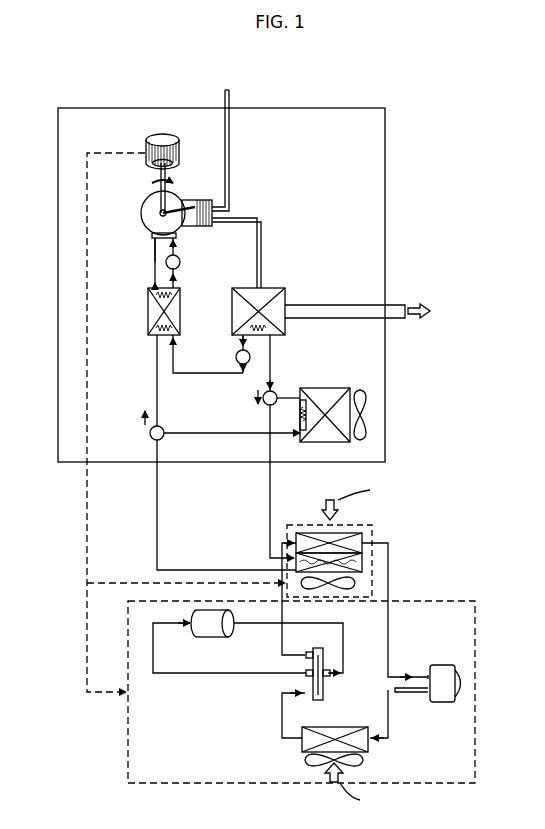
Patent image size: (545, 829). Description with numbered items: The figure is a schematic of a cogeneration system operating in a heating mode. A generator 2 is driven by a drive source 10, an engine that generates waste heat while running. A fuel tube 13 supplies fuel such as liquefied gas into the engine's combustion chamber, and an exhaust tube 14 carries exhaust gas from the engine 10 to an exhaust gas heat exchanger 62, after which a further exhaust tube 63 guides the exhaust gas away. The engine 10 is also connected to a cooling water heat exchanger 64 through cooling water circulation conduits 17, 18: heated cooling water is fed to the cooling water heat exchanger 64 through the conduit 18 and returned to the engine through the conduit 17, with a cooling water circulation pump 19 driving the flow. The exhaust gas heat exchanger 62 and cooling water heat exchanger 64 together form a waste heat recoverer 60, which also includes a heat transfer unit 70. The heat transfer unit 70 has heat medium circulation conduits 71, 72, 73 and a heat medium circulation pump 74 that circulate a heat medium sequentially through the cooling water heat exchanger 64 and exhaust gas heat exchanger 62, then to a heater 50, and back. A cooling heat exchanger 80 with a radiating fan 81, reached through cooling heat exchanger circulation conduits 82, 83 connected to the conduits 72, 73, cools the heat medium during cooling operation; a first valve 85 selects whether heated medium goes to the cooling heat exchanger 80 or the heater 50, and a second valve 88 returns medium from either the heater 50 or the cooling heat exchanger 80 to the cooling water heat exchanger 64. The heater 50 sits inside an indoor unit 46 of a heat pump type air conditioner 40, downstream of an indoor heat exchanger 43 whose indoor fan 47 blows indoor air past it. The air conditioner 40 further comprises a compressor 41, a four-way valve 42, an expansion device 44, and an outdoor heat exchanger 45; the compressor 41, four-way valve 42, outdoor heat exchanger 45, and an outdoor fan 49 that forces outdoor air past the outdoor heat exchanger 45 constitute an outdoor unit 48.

The generator 2 is at (180, 148).
The drive source 10 is at (150, 208).
The fuel tube 13 is at (229, 190).
The exhaust tube 14 is at (262, 254).
The cooling water circulation conduit 17 is at (154, 285).
The cooling water circulation conduit 18 is at (154, 257).
The cooling water circulation pump 19 is at (181, 262).
The heat pump type air conditioner 40 is at (465, 585).
The compressor 41 is at (210, 630).
The 4-way valve 42 is at (325, 690).
The indoor heat exchanger 43 is at (358, 533).
The expansion device 44 is at (462, 687).
The outdoor heat exchanger 45 is at (368, 747).
The indoor unit 46 is at (374, 530).
The indoor fan 47 is at (356, 583).
The outdoor unit 48 is at (122, 745).
The outdoor fan 49 is at (304, 760).
The heater 50 is at (364, 562).
The waste heat recoverer 60 is at (140, 305).
The exhaust gas heat exchanger 62 is at (284, 325).
The exhaust tube 63 is at (350, 304).
The cooling water heat exchanger 64 is at (148, 320).
The heat transfer unit 70 is at (146, 446).
The heat medium circulation conduit 71 is at (220, 374).
The heat medium circulation conduit 72 is at (270, 490).
The heat medium circulation conduit 73 is at (156, 498).
The heat medium circulation pump 74 is at (238, 352).
The cooling heat exchanger 80 is at (350, 392).
The radiating fan 81 is at (366, 430).
The cooling heat exchanger circulation conduit 82 is at (288, 396).
The cooling heat exchanger circulation conduit 83 is at (290, 436).
The first valve 85 is at (272, 390).
The second valve 88 is at (163, 430).